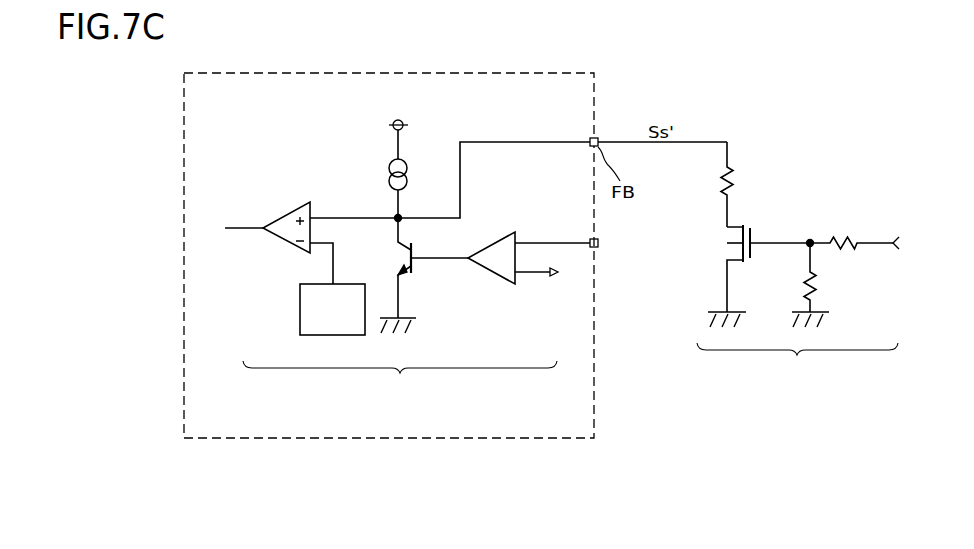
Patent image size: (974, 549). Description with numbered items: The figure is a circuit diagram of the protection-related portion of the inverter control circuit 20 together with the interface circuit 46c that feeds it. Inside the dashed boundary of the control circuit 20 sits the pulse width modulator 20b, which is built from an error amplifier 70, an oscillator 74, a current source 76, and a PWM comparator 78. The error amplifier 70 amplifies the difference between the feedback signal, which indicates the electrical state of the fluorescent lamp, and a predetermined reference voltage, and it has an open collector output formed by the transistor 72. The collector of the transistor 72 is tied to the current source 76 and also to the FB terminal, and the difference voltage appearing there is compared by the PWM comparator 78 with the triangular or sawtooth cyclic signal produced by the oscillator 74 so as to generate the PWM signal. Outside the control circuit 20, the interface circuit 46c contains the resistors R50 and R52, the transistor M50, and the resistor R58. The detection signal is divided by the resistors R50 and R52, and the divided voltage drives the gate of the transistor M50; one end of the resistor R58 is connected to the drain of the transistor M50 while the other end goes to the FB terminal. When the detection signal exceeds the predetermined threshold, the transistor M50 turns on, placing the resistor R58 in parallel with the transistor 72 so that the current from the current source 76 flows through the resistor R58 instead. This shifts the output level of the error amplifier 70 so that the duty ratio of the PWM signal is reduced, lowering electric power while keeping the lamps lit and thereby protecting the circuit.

The control circuit 20 is at (395, 438).
The pulse width modulator 20b is at (400, 379).
The interface circuit 46c is at (797, 363).
The error amplifier 70 is at (490, 276).
The transistor 72 is at (412, 279).
The oscillator 74 is at (300, 306).
The current source 76 is at (408, 165).
The PWM comparator 78 is at (283, 211).
The resistor R58 is at (745, 184).
The transistor M50 is at (747, 276).
The resistor R50 is at (867, 237).
The resistor R52 is at (822, 285).